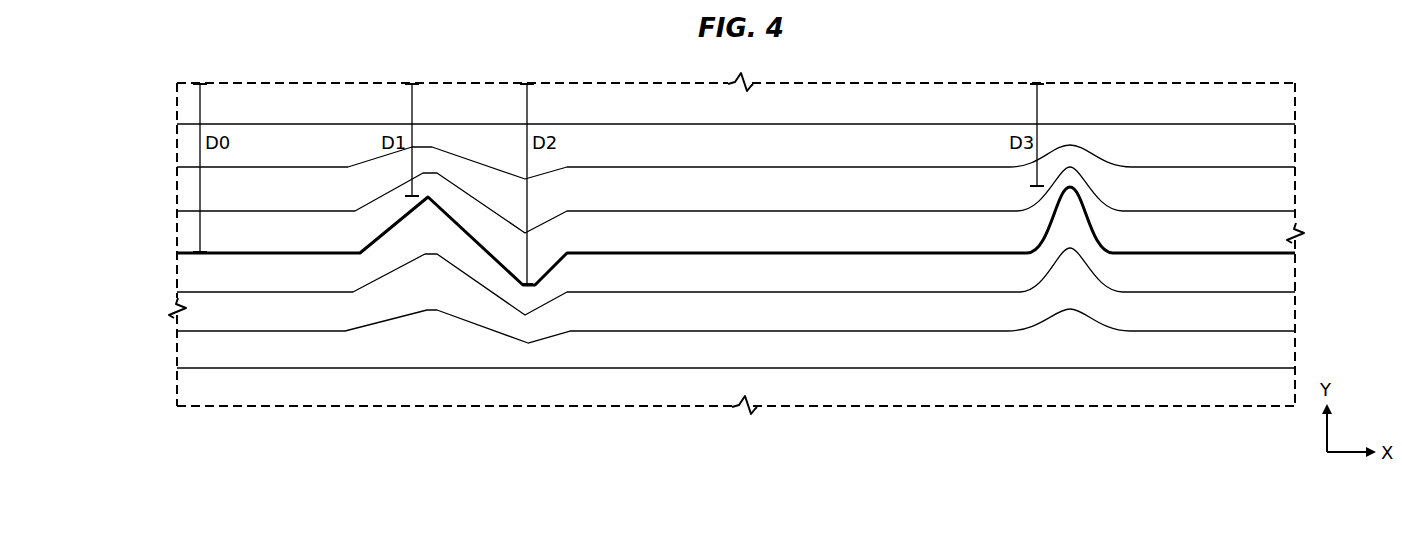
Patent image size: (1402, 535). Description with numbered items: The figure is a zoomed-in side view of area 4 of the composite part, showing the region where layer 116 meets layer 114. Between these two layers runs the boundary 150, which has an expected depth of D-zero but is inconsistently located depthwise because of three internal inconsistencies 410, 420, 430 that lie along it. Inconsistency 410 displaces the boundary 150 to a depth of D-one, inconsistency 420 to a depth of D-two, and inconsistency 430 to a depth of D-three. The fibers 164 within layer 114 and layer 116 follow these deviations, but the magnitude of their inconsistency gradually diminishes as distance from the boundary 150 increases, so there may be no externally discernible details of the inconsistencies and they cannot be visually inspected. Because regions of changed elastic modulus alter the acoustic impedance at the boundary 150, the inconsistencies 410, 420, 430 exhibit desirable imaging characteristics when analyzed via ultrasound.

The area 4 is at (564, 437).
The layer 114 is at (177, 348).
The layer 116 is at (177, 135).
The boundary 150 is at (170, 252).
The fibers 164 is at (1187, 124).
The inconsistency 410 is at (452, 183).
The inconsistency 420 is at (532, 287).
The inconsistency 430 is at (1083, 198).